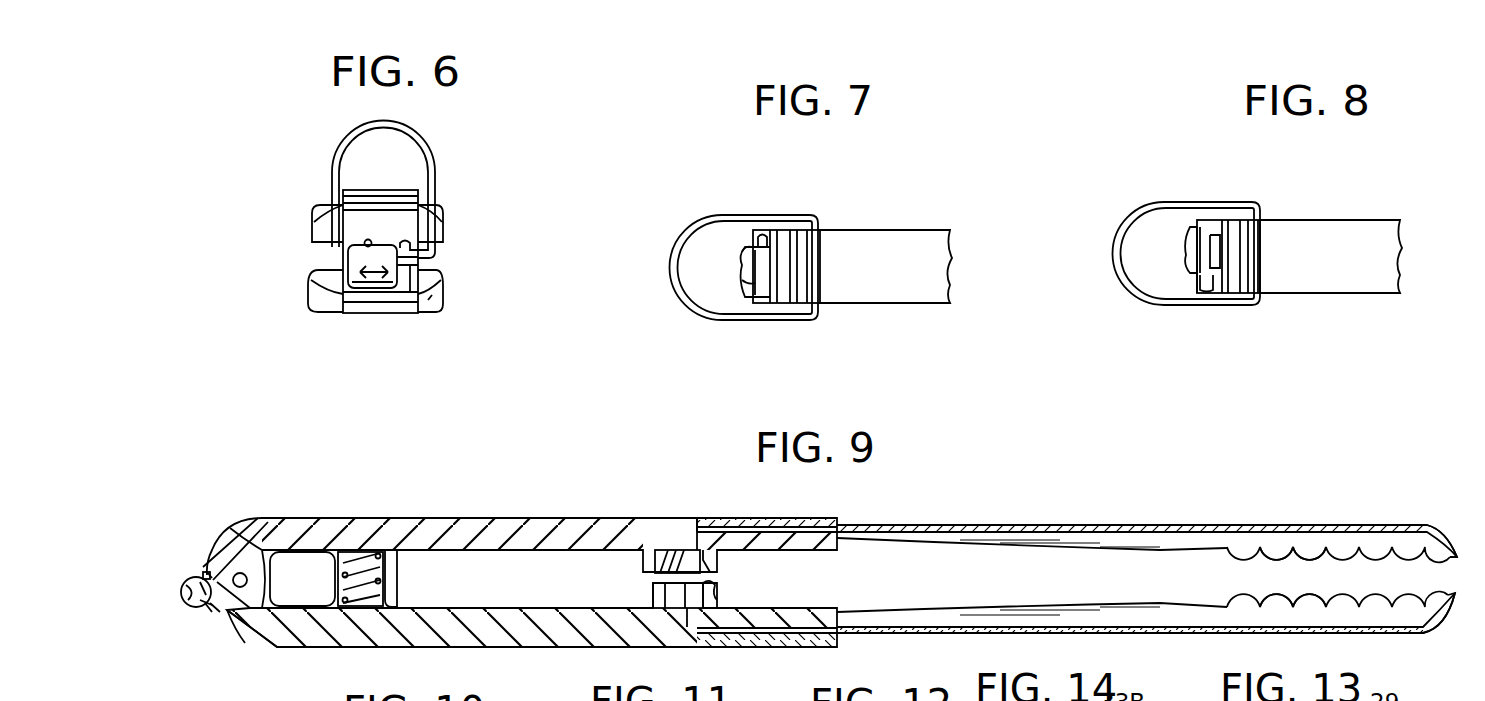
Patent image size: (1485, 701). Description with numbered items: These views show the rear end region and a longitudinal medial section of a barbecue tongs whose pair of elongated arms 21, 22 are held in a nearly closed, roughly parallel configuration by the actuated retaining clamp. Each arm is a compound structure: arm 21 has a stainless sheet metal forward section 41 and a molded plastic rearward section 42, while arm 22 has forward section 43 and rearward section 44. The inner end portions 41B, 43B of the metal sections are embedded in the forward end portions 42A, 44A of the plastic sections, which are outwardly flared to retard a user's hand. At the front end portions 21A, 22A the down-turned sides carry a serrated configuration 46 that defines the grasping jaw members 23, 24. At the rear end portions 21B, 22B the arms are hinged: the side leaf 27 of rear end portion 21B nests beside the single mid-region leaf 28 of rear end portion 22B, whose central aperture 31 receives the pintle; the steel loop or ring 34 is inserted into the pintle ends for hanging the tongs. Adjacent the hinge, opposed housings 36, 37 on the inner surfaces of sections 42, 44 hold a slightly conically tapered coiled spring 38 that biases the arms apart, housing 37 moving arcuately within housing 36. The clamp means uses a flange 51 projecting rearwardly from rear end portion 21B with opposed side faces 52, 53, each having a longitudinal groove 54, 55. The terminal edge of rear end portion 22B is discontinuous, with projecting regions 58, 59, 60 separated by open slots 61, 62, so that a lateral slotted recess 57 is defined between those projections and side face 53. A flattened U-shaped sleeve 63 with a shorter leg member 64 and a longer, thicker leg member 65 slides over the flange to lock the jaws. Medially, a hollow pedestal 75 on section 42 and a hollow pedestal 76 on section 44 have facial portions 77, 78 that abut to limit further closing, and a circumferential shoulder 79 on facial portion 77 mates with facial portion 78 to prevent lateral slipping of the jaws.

In FIG. 9, the elongated arm 21 is at (915, 635).
In FIG. 9, the proximal or front end portion 21A is at (1450, 635).
In FIG. 9, the distal or rear end portion 21B is at (232, 612).
In FIG. 9, the elongated arm 22 is at (928, 520).
In FIG. 9, the proximal or front end portion 22A is at (1455, 545).
In FIG. 9, the distal or rear end portion 22B is at (228, 523).
In FIG. 9, the jaw member 23 is at (1375, 633).
In FIG. 9, the jaw member 24 is at (1363, 525).
In FIG. 9, the leaf 27 is at (228, 610).
In FIG. 9, the leaf 28 is at (282, 540).
In FIG. 9, the central aperture 31 is at (246, 573).
In FIG. 6, the loop or ring 34 is at (343, 137).
In FIG. 7, the loop or ring 34 is at (668, 253).
In FIG. 8, the loop or ring 34 is at (1112, 250).
In FIG. 9, the housing 36 is at (392, 600).
In FIG. 9, the housing 37 is at (335, 557).
In FIG. 9, the coiled spring 38 is at (370, 550).
In FIG. 9, the forward section 41 is at (1080, 623).
In FIG. 9, the inner end portion 41B is at (730, 620).
In FIG. 6, the rearward section 42 is at (372, 306).
In FIG. 7, the rearward section 42 is at (870, 243).
In FIG. 8, the rearward section 42 is at (1299, 256).
In FIG. 9, the rearward section 42 is at (540, 637).
In FIG. 9, the forward end portion 42A is at (777, 647).
In FIG. 9, the forward section 43 is at (1073, 525).
In FIG. 9, the inner end portion 43B is at (657, 553).
In FIG. 9, the rearward section 44 is at (572, 523).
In FIG. 9, the forward end portion 44A is at (810, 522).
In FIG. 9, the serrated or tooth-like configuration 46 is at (1340, 552).
In FIG. 6, the flange 51 is at (410, 292).
In FIG. 7, the flange 51 is at (752, 247).
In FIG. 9, the flange 51 is at (203, 603).
In FIG. 7, the side face 52 is at (763, 232).
In FIG. 9, the side face 52 is at (203, 577).
In FIG. 8, the side face 53 is at (1197, 290).
In FIG. 9, the side face 53 is at (208, 603).
In FIG. 7, the groove 54 is at (763, 233).
In FIG. 8, the groove 55 is at (1208, 283).
In FIG. 6, the slotted recess 57 is at (410, 255).
In FIG. 9, the slotted recess 57 is at (207, 572).
In FIG. 6, the projecting region 58 is at (347, 243).
In FIG. 6, the projecting region 59 is at (392, 242).
In FIG. 6, the projecting region 60 is at (413, 242).
In FIG. 6, the open slot 61 is at (370, 240).
In FIG. 6, the open slot 62 is at (432, 247).
In FIG. 6, the U-shaped sleeve 63 is at (355, 260).
In FIG. 7, the U-shaped sleeve 63 is at (753, 280).
In FIG. 8, the U-shaped sleeve 63 is at (1183, 257).
In FIG. 9, the U-shaped sleeve 63 is at (182, 598).
In FIG. 9, the leg member 64 is at (211, 605).
In FIG. 9, the leg member 65 is at (213, 553).
In FIG. 9, the pedestal 75 is at (653, 593).
In FIG. 9, the pedestal 76 is at (655, 565).
In FIG. 9, the facial portion 77 is at (687, 627).
In FIG. 9, the facial portion 78 is at (711, 571).
In FIG. 9, the shoulder 79 is at (710, 585).